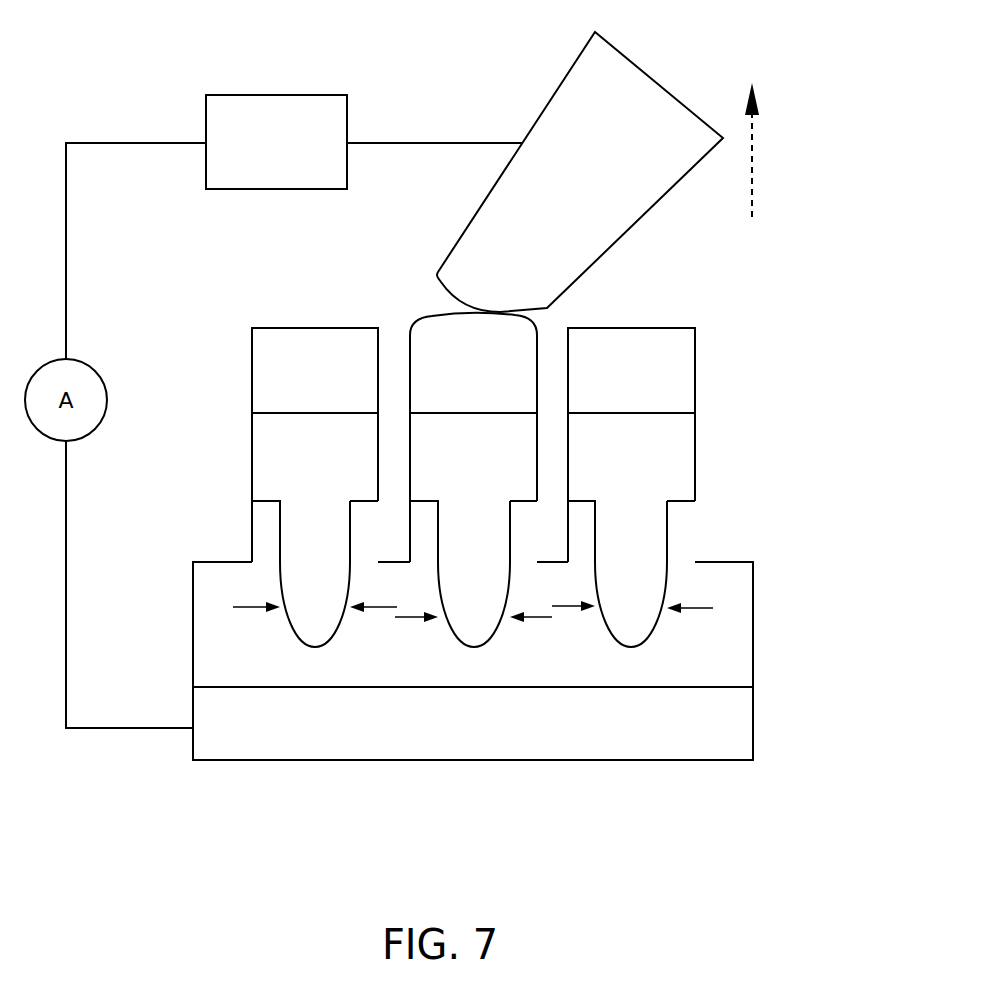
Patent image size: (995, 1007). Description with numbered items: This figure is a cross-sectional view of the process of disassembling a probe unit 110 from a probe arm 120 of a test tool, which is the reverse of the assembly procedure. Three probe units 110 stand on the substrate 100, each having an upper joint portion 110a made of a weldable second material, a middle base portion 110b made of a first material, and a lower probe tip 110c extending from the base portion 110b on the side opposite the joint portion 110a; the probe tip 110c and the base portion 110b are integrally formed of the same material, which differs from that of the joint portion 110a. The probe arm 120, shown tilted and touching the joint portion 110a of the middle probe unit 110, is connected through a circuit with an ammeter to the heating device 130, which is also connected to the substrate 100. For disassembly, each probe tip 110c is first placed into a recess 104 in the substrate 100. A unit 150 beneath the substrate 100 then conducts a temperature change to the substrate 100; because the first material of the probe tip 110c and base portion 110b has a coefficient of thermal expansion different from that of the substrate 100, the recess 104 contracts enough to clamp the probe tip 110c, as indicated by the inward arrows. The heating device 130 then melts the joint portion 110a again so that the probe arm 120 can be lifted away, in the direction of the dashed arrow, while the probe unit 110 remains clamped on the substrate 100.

The substrate 100 is at (738, 633).
The recess 104 is at (492, 637).
The probe unit 110 is at (565, 437).
The joint portion 110a is at (683, 368).
The base portion 110b is at (683, 455).
The probe tip 110c is at (528, 531).
The probe arm 120 is at (598, 172).
The heating device 130 is at (276, 142).
The unit 150 is at (738, 728).